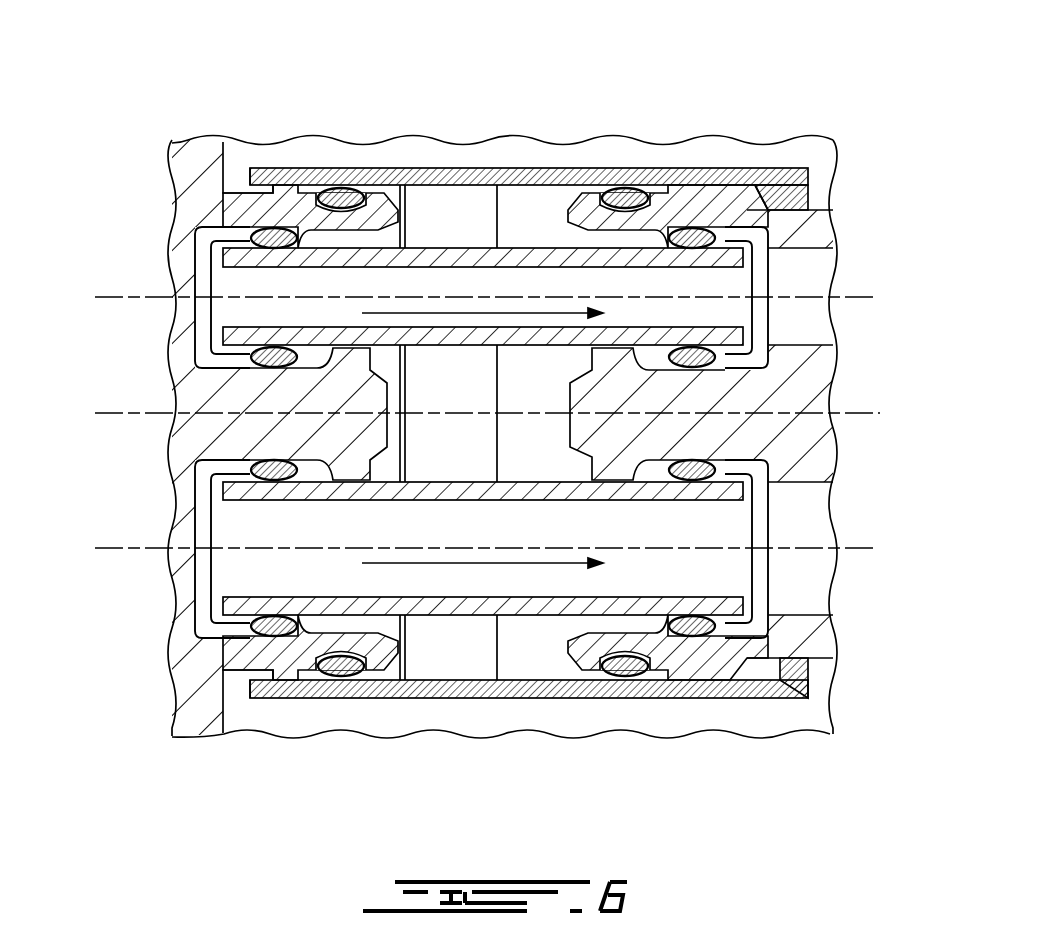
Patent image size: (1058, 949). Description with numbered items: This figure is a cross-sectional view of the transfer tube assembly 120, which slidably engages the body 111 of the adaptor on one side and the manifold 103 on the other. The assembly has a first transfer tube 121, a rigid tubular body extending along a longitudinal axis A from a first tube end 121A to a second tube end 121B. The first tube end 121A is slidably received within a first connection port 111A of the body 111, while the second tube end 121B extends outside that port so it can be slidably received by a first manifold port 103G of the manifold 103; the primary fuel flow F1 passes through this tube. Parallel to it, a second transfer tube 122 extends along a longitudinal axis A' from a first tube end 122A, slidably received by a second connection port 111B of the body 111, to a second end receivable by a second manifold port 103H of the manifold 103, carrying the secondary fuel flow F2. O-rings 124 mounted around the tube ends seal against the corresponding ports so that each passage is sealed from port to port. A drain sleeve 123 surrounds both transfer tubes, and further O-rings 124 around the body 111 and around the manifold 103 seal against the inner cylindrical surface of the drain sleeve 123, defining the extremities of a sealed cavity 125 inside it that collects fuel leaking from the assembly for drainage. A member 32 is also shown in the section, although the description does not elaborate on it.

The transfer tube assembly 120 is at (660, 108).
The first transfer tube 121 is at (434, 262).
The first tube end 121A is at (225, 228).
The second tube end 121B is at (812, 192).
The second transfer tube 122 is at (446, 477).
The first tube end 122A is at (222, 657).
The drain sleeve 123 is at (492, 262).
The O-rings 124 is at (270, 636).
The sealed cavity 125 is at (458, 640).
The body 111 is at (190, 430).
The first connection port 111A is at (203, 238).
The second connection port 111B is at (200, 625).
The manifold 103 is at (812, 383).
The first manifold port 103G is at (822, 228).
The second manifold port 103H is at (822, 636).
The second plate 32 is at (722, 190).
The primary fuel flow F1 is at (528, 300).
The secondary fuel flow F2 is at (520, 580).
The longitudinal axis A is at (523, 274).
The longitudinal axis A' is at (526, 523).